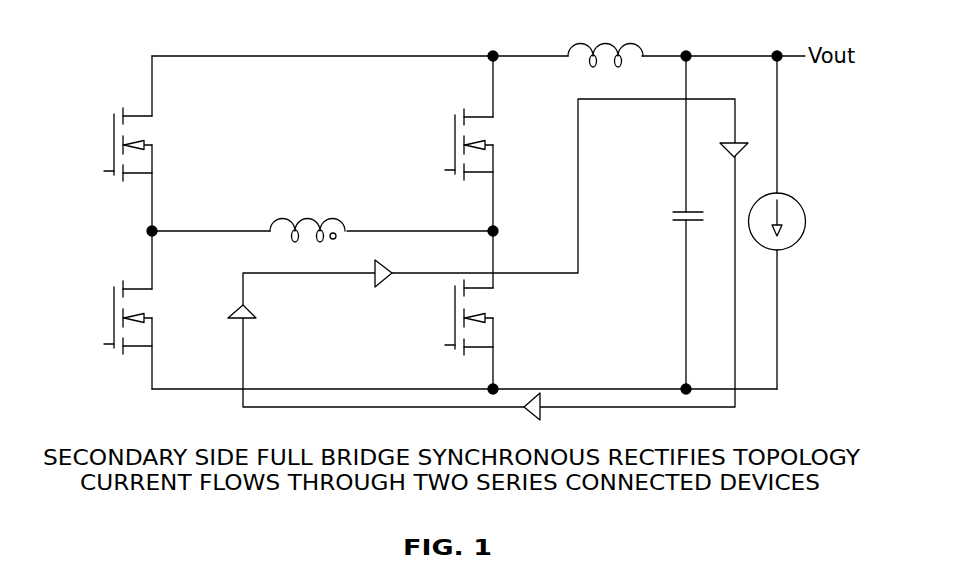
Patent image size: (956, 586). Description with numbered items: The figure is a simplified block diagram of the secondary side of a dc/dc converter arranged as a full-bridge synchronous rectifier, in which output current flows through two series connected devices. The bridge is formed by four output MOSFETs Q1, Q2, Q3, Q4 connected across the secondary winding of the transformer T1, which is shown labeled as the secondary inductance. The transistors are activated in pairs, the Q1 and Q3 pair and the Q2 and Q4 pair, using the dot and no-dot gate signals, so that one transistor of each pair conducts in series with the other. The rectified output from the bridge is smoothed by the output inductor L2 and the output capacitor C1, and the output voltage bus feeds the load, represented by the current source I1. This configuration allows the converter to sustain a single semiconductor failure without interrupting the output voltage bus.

The output MOSFET Q1 is at (120, 143).
The output MOSFET Q2 is at (143, 310).
The output MOSFET Q3 is at (458, 310).
The output MOSFET Q4 is at (483, 143).
The transformer secondary winding Lsec T1 is at (307, 229).
The output inductor Lout L2 is at (605, 57).
The output capacitor Cout C1 is at (668, 222).
The load current source Iload I1 is at (794, 222).